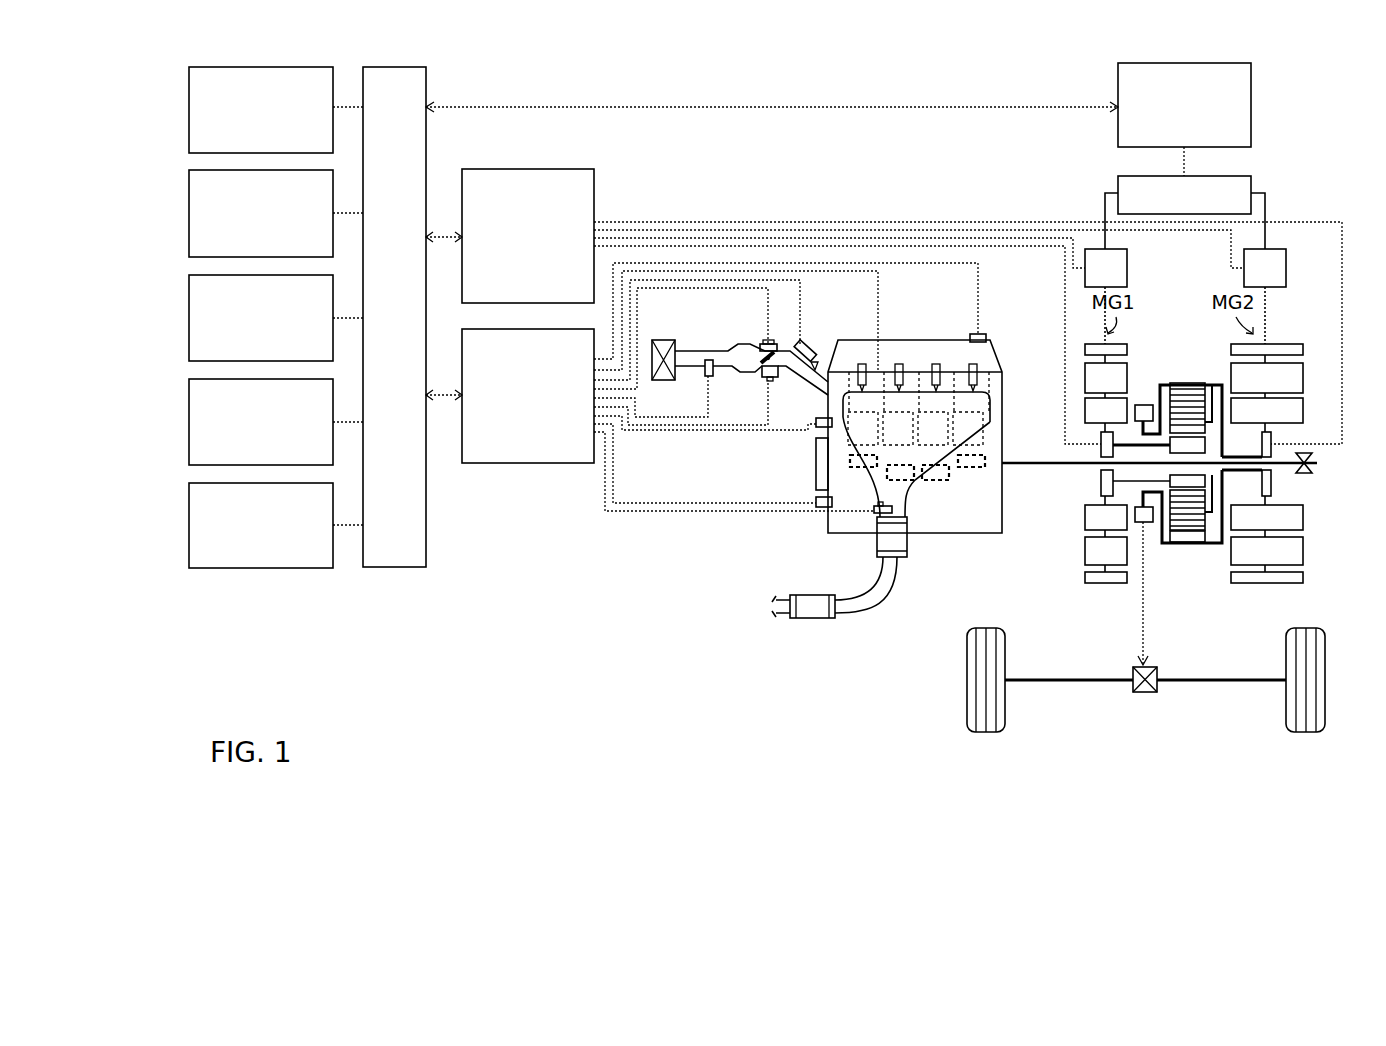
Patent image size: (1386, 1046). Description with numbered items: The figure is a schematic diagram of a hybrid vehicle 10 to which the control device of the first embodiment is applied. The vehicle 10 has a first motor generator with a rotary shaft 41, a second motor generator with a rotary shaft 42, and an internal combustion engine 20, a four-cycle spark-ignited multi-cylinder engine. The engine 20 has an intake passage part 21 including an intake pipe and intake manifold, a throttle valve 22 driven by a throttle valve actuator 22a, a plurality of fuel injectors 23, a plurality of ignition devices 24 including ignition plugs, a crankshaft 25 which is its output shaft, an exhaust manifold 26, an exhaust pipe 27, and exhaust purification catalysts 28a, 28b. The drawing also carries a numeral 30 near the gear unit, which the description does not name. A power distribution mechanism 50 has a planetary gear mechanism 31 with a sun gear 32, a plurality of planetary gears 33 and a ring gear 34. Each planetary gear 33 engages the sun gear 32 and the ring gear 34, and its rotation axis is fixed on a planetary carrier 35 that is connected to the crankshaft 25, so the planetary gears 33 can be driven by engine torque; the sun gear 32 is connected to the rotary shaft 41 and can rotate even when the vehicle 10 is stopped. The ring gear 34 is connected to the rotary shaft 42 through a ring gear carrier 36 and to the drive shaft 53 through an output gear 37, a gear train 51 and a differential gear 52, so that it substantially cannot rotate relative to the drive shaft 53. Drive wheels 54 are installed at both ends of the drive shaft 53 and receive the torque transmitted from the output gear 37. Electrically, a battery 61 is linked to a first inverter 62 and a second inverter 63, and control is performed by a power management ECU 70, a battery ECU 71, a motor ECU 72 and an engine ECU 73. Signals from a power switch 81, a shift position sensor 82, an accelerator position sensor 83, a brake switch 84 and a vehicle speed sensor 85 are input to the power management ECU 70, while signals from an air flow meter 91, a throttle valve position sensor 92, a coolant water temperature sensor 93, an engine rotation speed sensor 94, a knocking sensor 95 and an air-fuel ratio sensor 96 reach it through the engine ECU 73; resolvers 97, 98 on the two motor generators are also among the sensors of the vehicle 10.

The hybrid vehicle 10 is at (568, 674).
The internal combustion engine 20 is at (834, 408).
The intake passage part 21 is at (745, 372).
The throttle valve 22 is at (737, 348).
The throttle valve actuator 22a is at (773, 380).
The fuel injector 23 is at (805, 347).
The ignition device 24 is at (973, 364).
The crankshaft 25 is at (1022, 462).
The exhaust manifold 26 is at (905, 505).
The exhaust pipe 27 is at (897, 588).
The exhaust purification catalyst 28a is at (906, 540).
The exhaust purification catalyst 28b is at (814, 618).
The planetary gear mechanism 30 is at (1195, 480).
The planetary gear mechanism 31 is at (1188, 378).
The sun gear 32 is at (1205, 445).
The planetary gear 33 is at (1185, 408).
The ring gear 34 is at (1187, 543).
The planetary carrier 35 is at (1212, 390).
The ring gear carrier 36 is at (1215, 543).
The output gear 37 is at (1143, 522).
The rotary shaft of motor generator MG1 41 is at (1130, 445).
The rotary shaft of motor generator MG2 42 is at (1243, 470).
The power distribution mechanism 50 is at (1146, 654).
The gear train 51 is at (1148, 632).
The differential gear 52 is at (1145, 692).
The drive shaft 53 is at (1065, 680).
The drive wheel 54 is at (986, 732).
The battery 61 is at (1240, 176).
The first inverter 62 is at (1127, 270).
The second inverter 63 is at (1286, 270).
The power management ECU 70 is at (395, 67).
The battery ECU 71 is at (1184, 63).
The motor ECU 72 is at (528, 169).
The engine ECU 73 is at (528, 464).
The power switch 81 is at (189, 107).
The shift position sensor 82 is at (189, 212).
The accelerator position sensor 83 is at (189, 317).
The brake switch 84 is at (189, 421).
The vehicle speed sensor 85 is at (189, 524).
The air flow meter 91 is at (708, 376).
The throttle valve position sensor 92 is at (767, 344).
The coolant water temperature sensor 93 is at (820, 428).
The engine rotation speed sensor 94 is at (819, 499).
The knocking sensor 95 is at (989, 338).
The air-fuel ratio sensor 96 is at (876, 513).
The resolver 97 is at (1101, 489).
The resolver 98 is at (1271, 489).